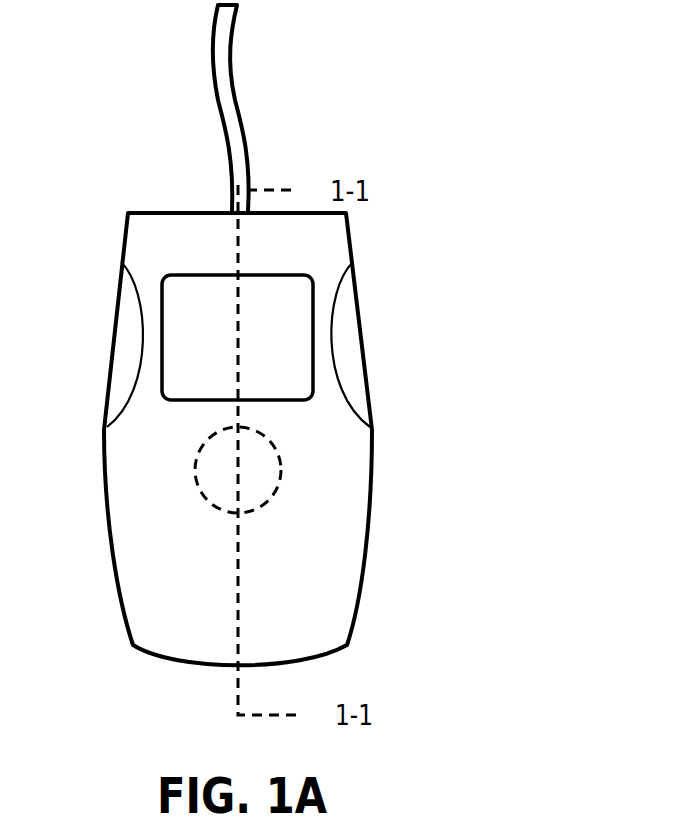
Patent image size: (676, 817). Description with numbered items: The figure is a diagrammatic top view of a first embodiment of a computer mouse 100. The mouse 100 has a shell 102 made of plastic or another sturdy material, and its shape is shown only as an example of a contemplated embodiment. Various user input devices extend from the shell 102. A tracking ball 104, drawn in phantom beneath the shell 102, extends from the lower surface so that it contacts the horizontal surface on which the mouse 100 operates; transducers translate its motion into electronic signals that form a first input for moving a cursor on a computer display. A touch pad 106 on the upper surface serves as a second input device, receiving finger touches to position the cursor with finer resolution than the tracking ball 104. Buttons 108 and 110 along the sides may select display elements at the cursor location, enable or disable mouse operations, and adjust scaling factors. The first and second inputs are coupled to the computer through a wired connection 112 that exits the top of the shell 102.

The computer mouse 100 is at (514, 225).
The shell 102 is at (172, 212).
The tracking ball 104 is at (224, 508).
The touch pad 106 is at (227, 275).
The button 108 is at (108, 330).
The button 110 is at (368, 325).
The wired connection 112 is at (247, 134).